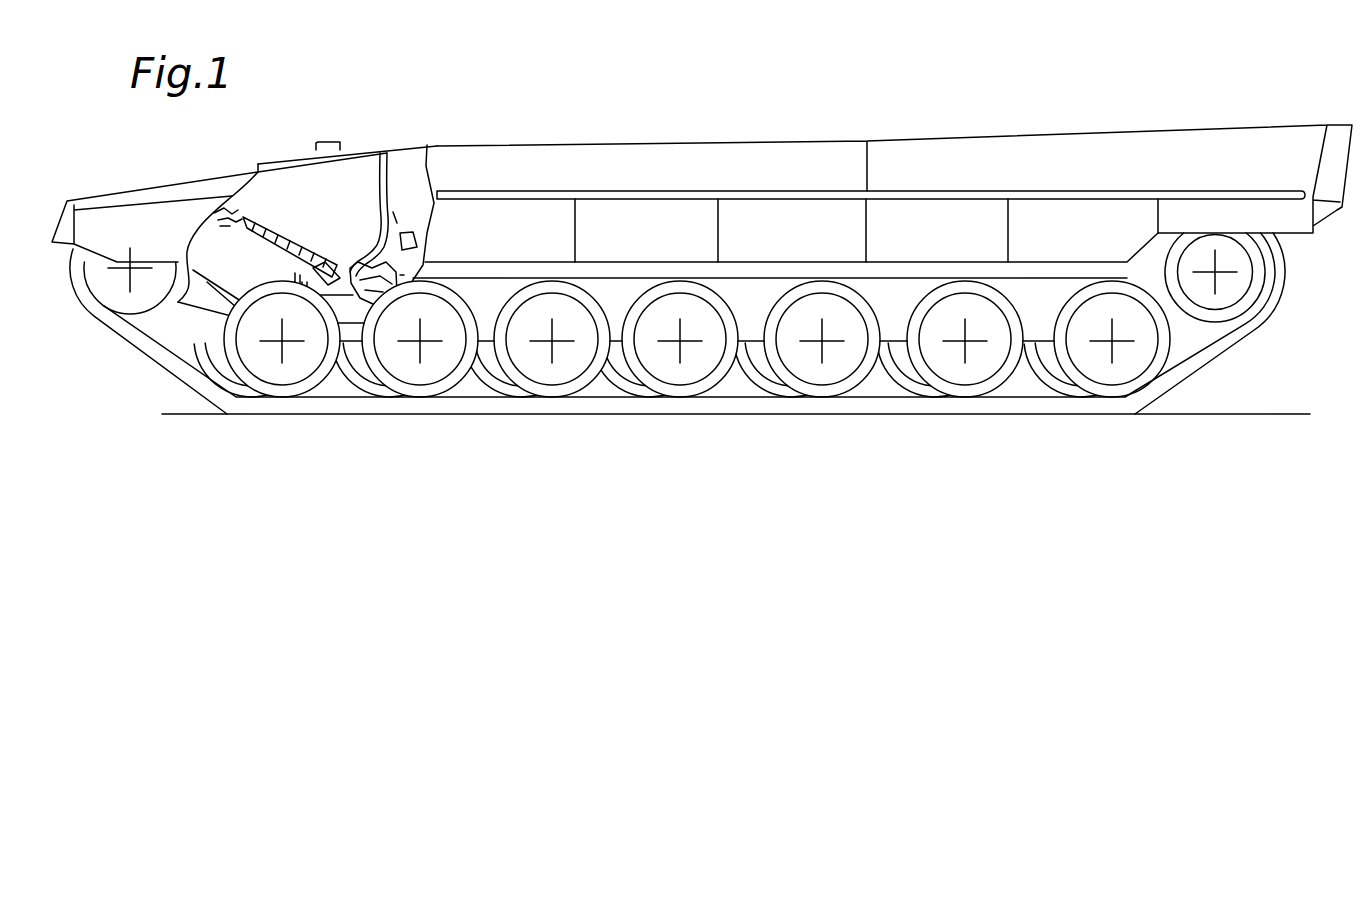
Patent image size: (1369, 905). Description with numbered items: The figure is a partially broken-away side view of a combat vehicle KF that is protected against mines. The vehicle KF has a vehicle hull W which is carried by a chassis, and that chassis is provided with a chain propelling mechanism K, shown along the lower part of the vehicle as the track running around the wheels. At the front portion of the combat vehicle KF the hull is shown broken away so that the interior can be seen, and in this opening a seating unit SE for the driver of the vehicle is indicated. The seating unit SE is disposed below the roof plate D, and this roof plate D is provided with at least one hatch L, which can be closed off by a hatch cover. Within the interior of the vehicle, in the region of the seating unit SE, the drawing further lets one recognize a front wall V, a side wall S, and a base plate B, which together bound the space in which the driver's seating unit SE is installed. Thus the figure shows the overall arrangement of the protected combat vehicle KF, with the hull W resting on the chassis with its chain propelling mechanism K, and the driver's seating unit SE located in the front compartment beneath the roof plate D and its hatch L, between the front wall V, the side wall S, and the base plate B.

The combat vehicle KF is at (724, 126).
The vehicle hull W is at (533, 230).
The front wall V is at (198, 233).
The hatch L is at (293, 162).
The seating unit SE is at (357, 238).
The roof plate D is at (387, 156).
The side wall S is at (402, 185).
The base plate B is at (253, 322).
The chain propelling mechanism K is at (557, 373).